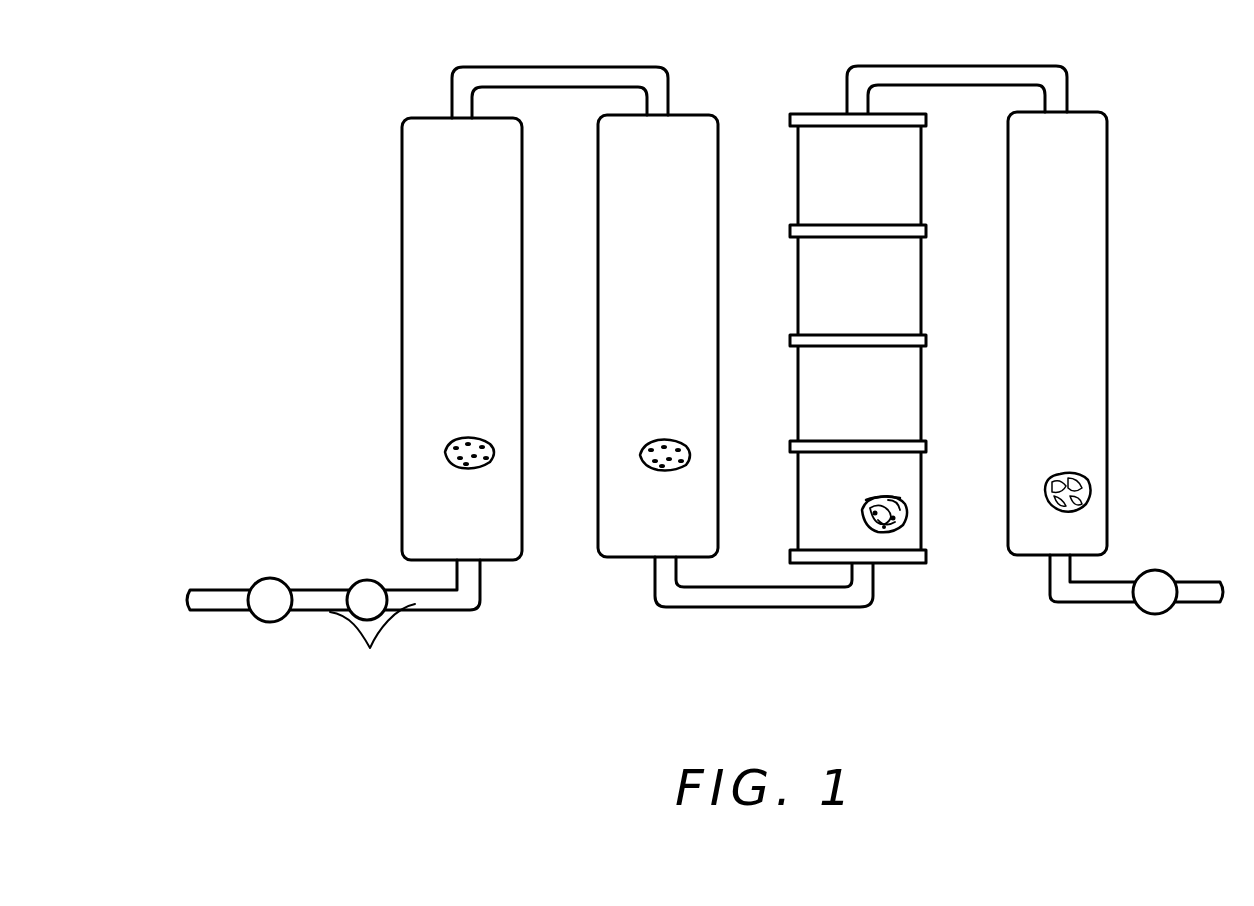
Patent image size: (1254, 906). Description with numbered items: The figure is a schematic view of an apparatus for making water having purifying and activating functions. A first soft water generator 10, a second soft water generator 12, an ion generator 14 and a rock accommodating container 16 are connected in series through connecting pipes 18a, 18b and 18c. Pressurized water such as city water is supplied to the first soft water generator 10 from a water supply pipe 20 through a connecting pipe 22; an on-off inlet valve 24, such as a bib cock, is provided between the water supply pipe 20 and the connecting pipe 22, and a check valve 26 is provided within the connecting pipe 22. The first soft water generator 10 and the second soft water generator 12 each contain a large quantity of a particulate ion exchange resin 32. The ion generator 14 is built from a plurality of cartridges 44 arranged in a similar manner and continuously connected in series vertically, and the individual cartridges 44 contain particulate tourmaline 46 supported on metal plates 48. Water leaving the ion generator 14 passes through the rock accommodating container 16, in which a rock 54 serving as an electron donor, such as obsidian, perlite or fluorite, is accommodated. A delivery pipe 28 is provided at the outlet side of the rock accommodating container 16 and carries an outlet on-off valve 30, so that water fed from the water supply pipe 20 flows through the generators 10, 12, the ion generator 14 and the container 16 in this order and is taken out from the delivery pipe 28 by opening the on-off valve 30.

The first soft water generator 10 is at (442, 283).
The second soft water generator 12 is at (633, 243).
The ion generator 14 is at (861, 301).
The rock accommodating container 16 is at (1087, 237).
The connecting pipe 18a is at (530, 78).
The connecting pipe 18b is at (748, 598).
The connecting pipe 18c is at (990, 66).
The water supply pipe 20 is at (230, 602).
The connecting pipe 22 is at (372, 650).
The on-off inlet valve 24 is at (270, 597).
The check valve 26 is at (367, 593).
The delivery pipe 28 is at (1112, 587).
The outlet on-off valve 30 is at (1157, 583).
The particulate ion exchange resin 32 is at (448, 443).
The cartridges 44 is at (887, 190).
The particulate tourmaline 46 is at (903, 503).
The metal plates 48 is at (883, 500).
The rock 54 is at (1087, 473).